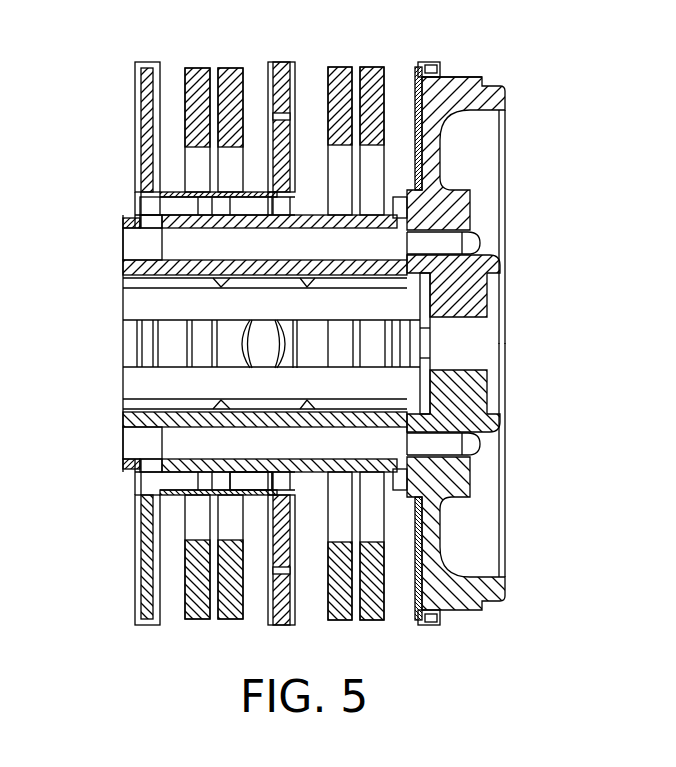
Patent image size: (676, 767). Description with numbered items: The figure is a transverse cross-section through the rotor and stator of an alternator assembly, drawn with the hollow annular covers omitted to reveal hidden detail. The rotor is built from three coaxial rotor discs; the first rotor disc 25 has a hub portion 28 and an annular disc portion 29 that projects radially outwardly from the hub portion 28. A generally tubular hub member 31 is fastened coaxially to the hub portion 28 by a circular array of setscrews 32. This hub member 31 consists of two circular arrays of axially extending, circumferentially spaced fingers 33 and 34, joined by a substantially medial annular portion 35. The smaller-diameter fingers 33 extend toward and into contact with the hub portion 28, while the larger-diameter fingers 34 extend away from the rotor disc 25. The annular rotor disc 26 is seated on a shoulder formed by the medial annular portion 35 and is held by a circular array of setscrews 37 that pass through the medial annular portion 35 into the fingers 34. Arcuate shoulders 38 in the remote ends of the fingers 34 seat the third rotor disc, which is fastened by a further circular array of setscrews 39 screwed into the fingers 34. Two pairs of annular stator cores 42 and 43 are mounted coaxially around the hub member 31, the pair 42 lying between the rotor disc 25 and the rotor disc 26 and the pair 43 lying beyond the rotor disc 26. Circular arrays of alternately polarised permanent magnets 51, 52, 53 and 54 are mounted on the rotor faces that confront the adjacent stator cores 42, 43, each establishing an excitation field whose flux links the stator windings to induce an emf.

The rotor disc 25 is at (470, 74).
The rotor disc 26 is at (285, 472).
The hub portion 28 is at (485, 288).
The annular disc portion 29 is at (434, 146).
The generally tubular hub member 31 is at (256, 342).
The setscrews 32 is at (175, 444).
The fingers 33 is at (373, 231).
The fingers 34 is at (127, 270).
The substantially medial annular portion 35 is at (257, 235).
The setscrews 37 is at (250, 487).
The arcuate shoulders 38 is at (126, 229).
The setscrews 39 is at (160, 206).
The annular stator cores 42 is at (384, 66).
The annular stator cores 43 is at (243, 66).
The permanent magnets 51 is at (418, 66).
The permanent magnets 52 is at (298, 612).
The permanent magnets 53 is at (272, 612).
The permanent magnets 54 is at (157, 70).